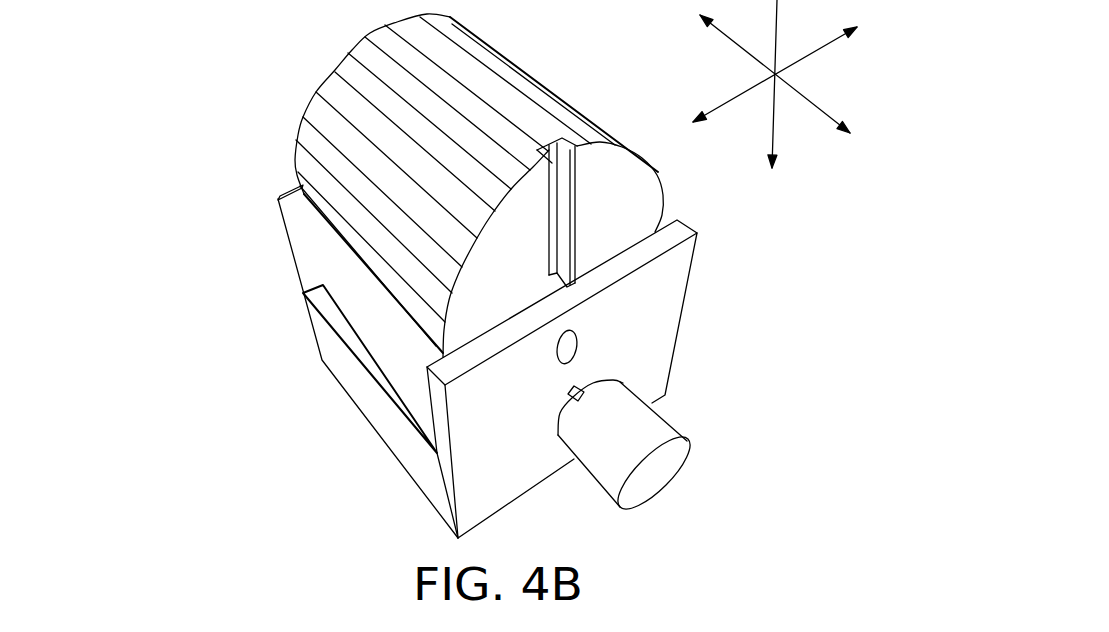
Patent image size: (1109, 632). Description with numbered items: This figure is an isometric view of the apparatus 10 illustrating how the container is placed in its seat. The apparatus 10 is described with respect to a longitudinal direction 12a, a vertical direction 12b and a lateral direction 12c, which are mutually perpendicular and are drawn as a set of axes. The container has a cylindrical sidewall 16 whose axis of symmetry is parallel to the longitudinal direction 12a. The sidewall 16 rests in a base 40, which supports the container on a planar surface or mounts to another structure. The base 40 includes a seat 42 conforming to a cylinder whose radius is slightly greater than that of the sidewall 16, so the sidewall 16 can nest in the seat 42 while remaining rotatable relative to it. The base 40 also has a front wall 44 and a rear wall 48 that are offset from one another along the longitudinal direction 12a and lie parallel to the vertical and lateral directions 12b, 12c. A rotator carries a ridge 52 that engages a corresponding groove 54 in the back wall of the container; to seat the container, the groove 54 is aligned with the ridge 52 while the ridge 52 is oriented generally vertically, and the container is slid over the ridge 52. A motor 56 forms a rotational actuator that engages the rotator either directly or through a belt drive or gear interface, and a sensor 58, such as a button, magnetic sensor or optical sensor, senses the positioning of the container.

The apparatus 10 is at (190, 266).
The longitudinal direction 12a is at (823, 118).
The vertical direction 12b is at (773, 12).
The lateral direction 12c is at (829, 46).
The sidewall 16 is at (374, 75).
The base 40 is at (340, 362).
The seat 42 is at (400, 332).
The front wall 44 is at (314, 238).
The rear wall 48 is at (490, 406).
The ridge 52 is at (578, 300).
The groove 54 is at (576, 155).
The motor 56 is at (665, 467).
The sensor 58 is at (575, 349).